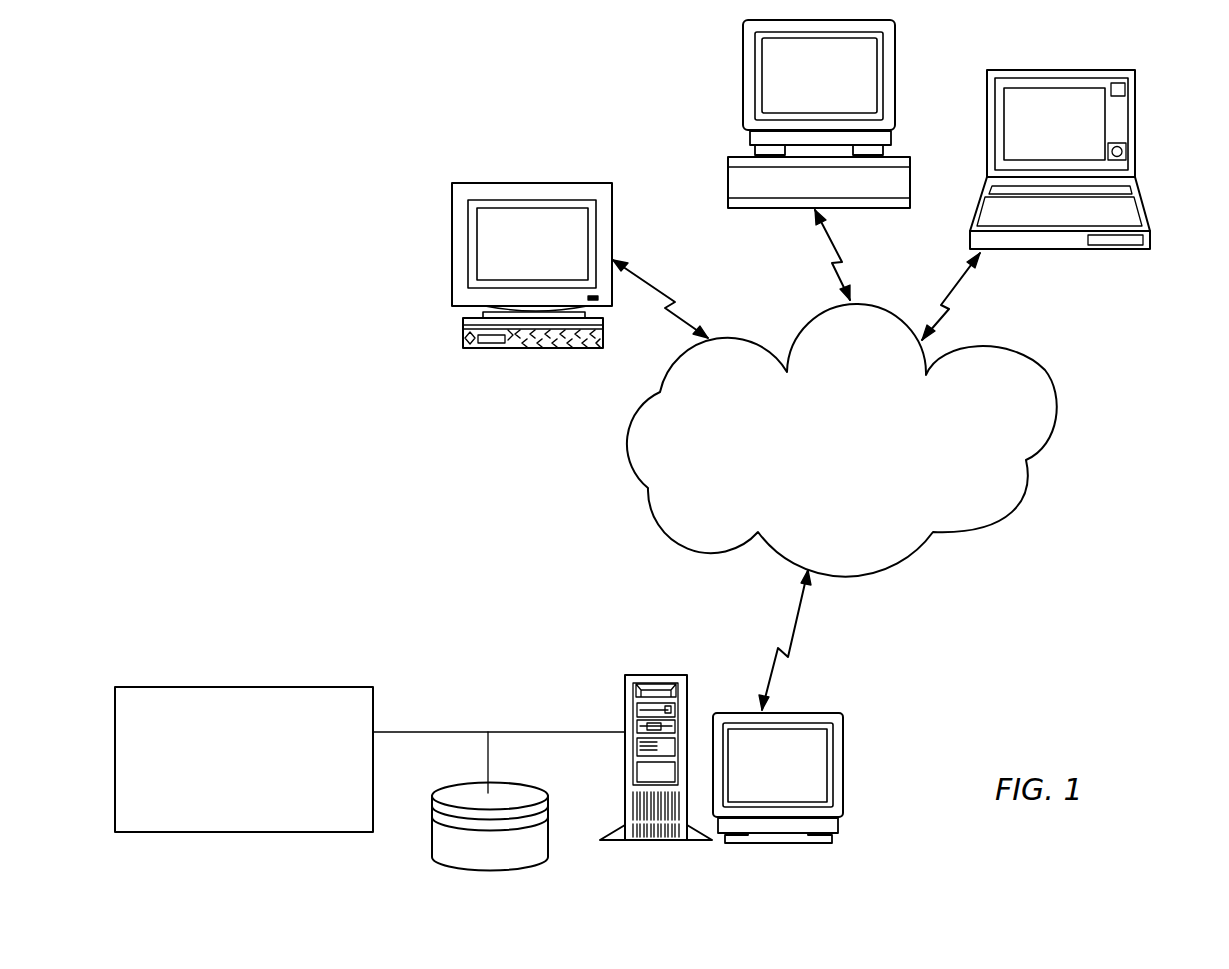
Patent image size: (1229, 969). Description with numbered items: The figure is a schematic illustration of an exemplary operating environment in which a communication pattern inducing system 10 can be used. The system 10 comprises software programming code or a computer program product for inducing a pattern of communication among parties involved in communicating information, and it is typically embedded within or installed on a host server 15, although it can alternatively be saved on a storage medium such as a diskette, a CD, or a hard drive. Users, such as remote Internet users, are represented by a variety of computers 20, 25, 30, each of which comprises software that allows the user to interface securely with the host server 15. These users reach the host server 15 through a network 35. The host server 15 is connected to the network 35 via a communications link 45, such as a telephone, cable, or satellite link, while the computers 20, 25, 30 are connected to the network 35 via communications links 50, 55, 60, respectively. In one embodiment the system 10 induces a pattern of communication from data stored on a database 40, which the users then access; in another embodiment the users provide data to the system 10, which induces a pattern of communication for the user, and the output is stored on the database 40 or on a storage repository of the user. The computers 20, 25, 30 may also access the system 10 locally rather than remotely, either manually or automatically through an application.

The communication pattern inducing system 10 is at (210, 687).
The host server 15 is at (645, 675).
The computer 20 is at (613, 240).
The computer 25 is at (896, 60).
The computer 30 is at (1140, 193).
The network 35 is at (1060, 415).
The database 40 is at (432, 842).
The communications link 45 is at (800, 612).
The communications link 50 is at (683, 320).
The communications link 55 is at (827, 232).
The communications link 60 is at (960, 285).